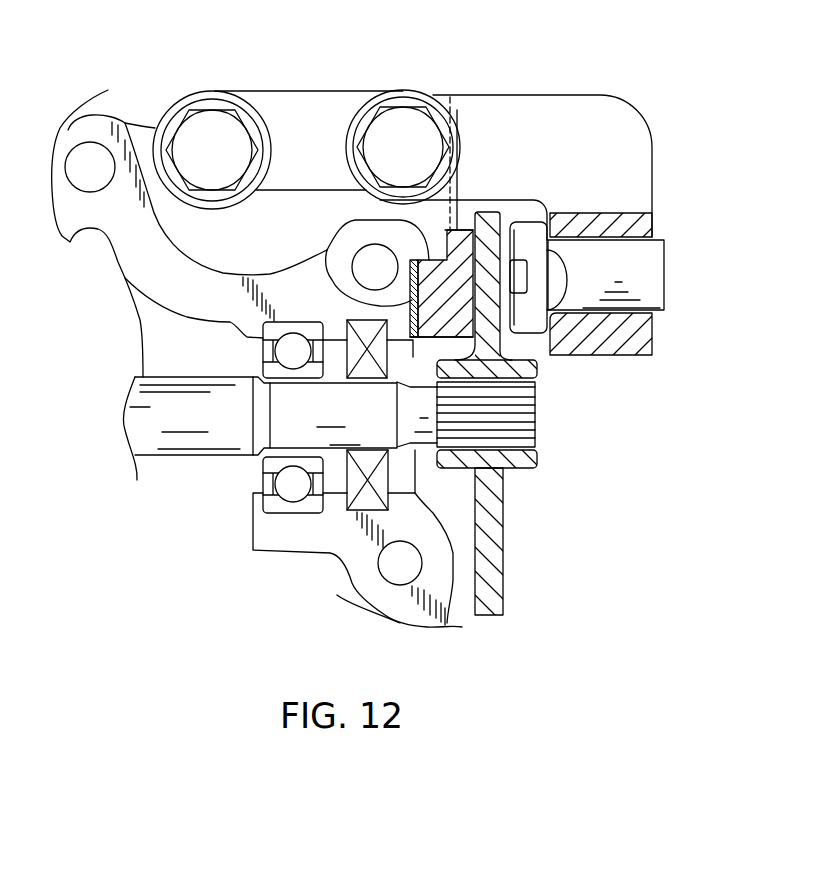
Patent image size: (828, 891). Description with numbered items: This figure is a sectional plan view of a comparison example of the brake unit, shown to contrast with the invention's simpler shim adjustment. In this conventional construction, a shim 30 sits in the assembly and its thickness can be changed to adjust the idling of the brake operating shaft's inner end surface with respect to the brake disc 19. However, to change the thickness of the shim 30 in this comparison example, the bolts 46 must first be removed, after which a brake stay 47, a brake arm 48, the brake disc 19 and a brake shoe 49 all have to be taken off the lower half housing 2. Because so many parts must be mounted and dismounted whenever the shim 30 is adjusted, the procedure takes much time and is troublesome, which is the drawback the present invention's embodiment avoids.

The lower half housing 2 is at (143, 132).
The brake disc 19 is at (503, 563).
The shim 30 is at (327, 253).
The bolts 46 is at (212, 127).
The brake stay 47 is at (527, 107).
The brake arm 48 is at (653, 288).
The brake shoe 49 is at (458, 130).